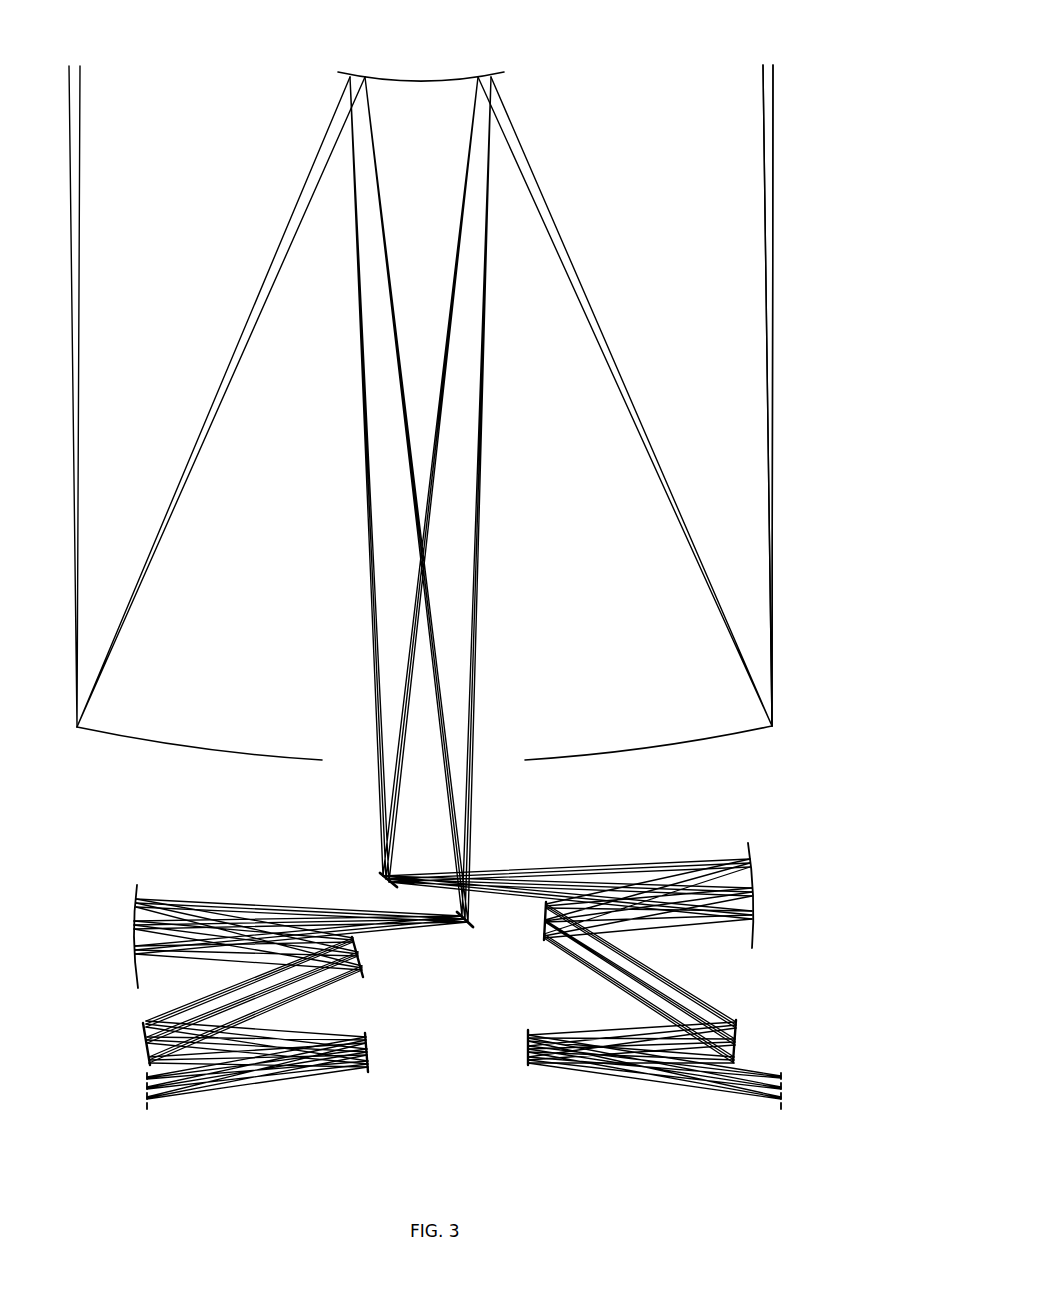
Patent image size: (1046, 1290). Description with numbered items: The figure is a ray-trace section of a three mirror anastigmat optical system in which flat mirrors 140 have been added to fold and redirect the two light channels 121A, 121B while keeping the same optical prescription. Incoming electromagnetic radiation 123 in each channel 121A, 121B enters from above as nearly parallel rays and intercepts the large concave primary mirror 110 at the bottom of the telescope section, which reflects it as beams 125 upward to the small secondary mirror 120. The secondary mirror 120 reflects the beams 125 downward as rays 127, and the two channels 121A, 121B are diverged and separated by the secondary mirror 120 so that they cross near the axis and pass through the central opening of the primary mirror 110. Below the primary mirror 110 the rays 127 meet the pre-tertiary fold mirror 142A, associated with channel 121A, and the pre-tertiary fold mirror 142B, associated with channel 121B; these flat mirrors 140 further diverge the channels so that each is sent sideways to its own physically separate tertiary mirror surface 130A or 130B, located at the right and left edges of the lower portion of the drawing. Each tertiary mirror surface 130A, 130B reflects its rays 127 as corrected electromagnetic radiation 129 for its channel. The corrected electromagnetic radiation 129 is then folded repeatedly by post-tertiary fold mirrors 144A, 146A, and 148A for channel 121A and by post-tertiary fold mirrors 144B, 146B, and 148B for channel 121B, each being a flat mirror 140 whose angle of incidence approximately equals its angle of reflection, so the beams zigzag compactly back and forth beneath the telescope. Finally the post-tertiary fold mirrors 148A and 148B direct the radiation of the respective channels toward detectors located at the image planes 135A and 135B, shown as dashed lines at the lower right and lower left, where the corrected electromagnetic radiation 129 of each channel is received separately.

The primary mirror 110 is at (140, 744).
The secondary mirror 120 is at (424, 78).
The channel 121A is at (775, 112).
The channel 121B is at (763, 112).
The incoming electromagnetic radiation 123 is at (777, 47).
The beams 125 is at (640, 315).
The rays 127 is at (514, 370).
The corrected electromagnetic radiation 129 is at (450, 1008).
The tertiary mirror surface 130A is at (755, 880).
The tertiary mirror surface 130B is at (135, 965).
The image plane 135A is at (772, 1126).
The image plane 135B is at (158, 1126).
The flat mirrors 140 is at (446, 969).
The pre-tertiary fold mirror 142A is at (382, 877).
The pre-tertiary fold mirror 142B is at (466, 928).
The post-tertiary fold mirror 144A is at (544, 932).
The post-tertiary fold mirror 144B is at (365, 970).
The post-tertiary fold mirror 146A is at (737, 1030).
The post-tertiary fold mirror 146B is at (143, 1048).
The post-tertiary fold mirror 148A is at (527, 1050).
The post-tertiary fold mirror 148B is at (372, 1065).